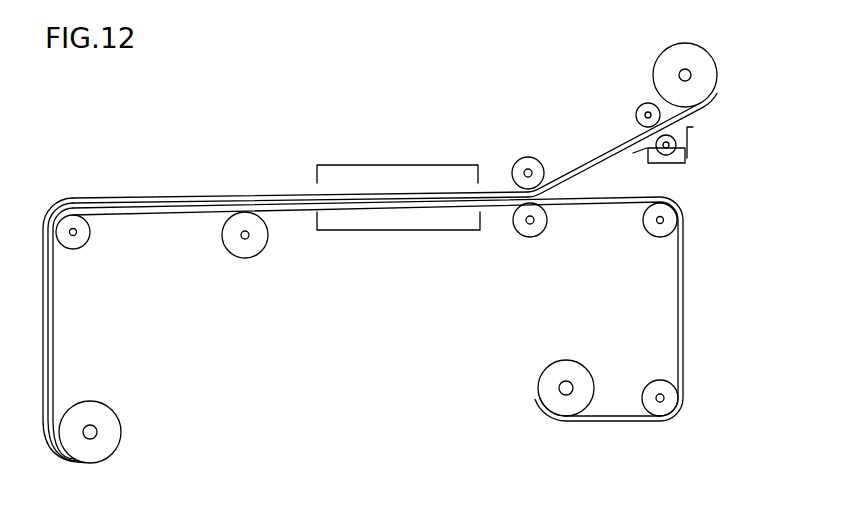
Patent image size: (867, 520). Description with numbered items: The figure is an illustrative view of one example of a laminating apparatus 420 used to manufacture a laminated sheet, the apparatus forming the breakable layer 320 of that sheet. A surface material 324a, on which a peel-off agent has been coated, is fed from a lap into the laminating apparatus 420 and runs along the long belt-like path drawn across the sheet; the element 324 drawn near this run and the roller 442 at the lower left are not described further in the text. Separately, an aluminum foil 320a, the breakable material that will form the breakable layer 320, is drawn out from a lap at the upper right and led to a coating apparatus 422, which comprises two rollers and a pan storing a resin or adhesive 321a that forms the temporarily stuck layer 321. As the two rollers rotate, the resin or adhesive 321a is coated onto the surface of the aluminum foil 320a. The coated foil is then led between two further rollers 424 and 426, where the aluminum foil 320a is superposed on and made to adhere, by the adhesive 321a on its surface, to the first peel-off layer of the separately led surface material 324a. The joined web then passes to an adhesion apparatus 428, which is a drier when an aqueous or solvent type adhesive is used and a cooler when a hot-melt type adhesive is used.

The laminating apparatus 420 is at (442, 72).
The breakable layer 320 is at (287, 193).
The aluminum foil 320a is at (662, 63).
The temporarily stuck layer 321 is at (286, 211).
The resin or adhesive 321a is at (586, 172).
The conveyor belt 324 is at (177, 212).
The surface material 324a is at (566, 380).
The coating apparatus 422 is at (613, 112).
The roller 424 is at (524, 171).
The roller 426 is at (530, 237).
The adhesion apparatus 428 is at (400, 232).
The roller 442 is at (97, 431).